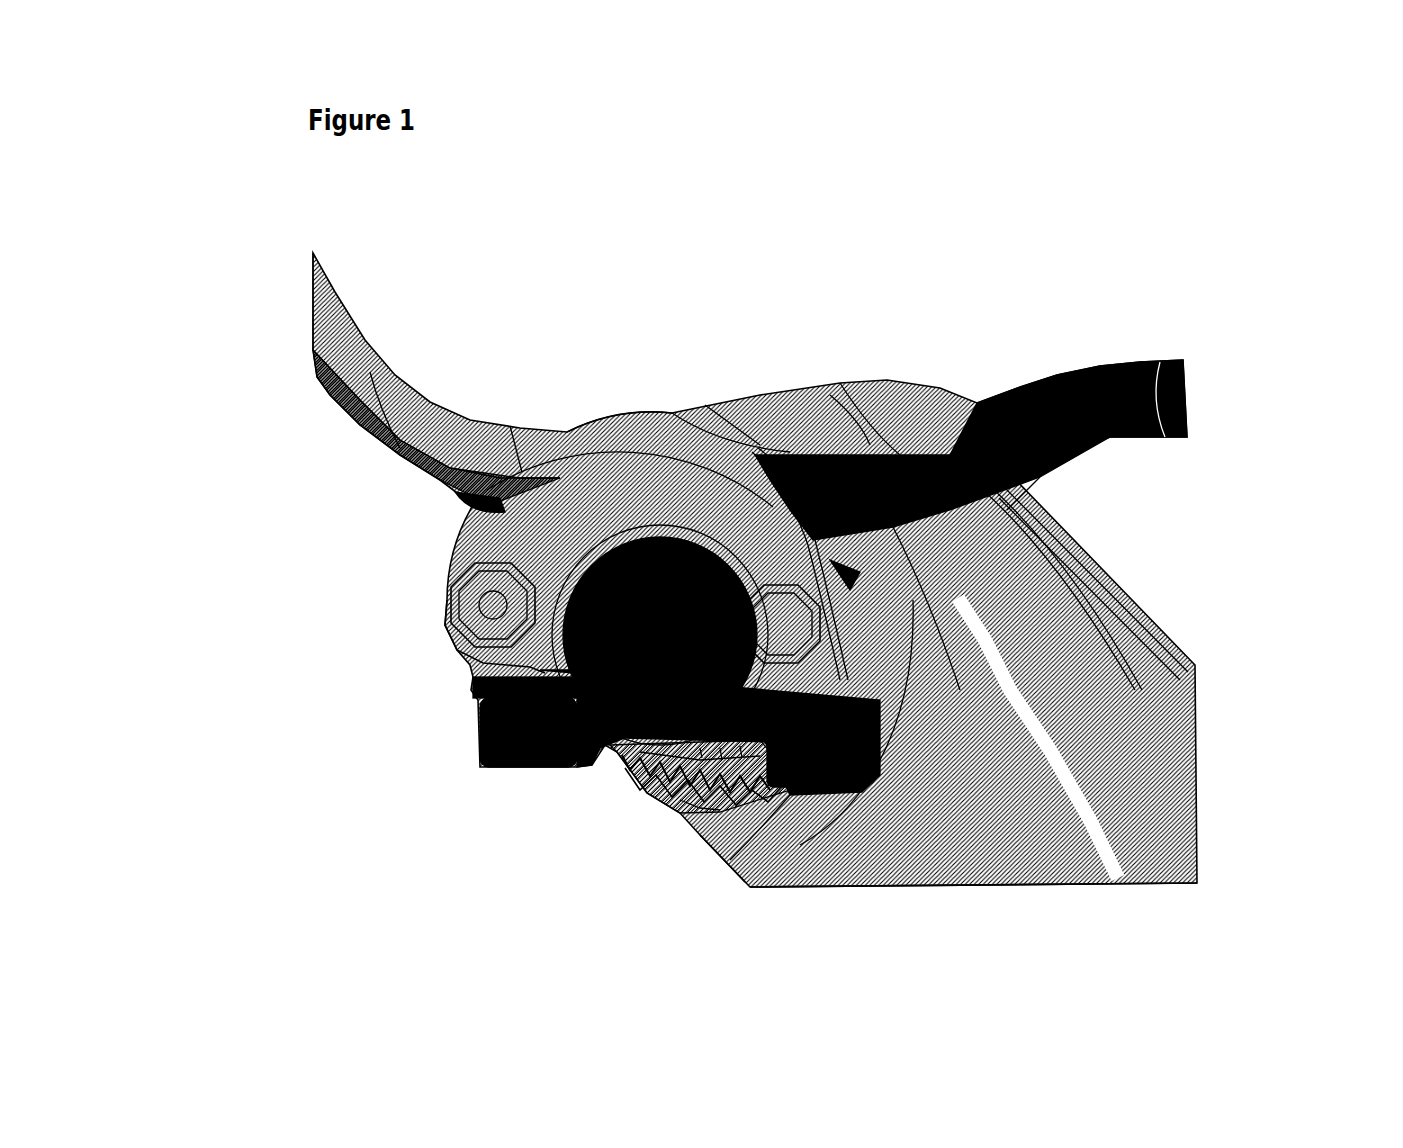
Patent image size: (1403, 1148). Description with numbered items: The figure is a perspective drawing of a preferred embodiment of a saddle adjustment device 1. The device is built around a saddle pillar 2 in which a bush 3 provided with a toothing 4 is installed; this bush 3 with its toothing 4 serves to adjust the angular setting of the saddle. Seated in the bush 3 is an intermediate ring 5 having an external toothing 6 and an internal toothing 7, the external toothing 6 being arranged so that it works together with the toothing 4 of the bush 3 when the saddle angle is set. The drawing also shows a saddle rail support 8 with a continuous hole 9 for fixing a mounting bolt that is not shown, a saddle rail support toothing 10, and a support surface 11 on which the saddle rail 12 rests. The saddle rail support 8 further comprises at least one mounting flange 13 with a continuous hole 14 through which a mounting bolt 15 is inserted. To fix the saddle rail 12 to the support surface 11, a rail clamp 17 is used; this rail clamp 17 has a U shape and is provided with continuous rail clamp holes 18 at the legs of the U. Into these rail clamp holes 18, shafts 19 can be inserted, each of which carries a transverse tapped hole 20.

The saddle adjustment device 1 is at (908, 260).
The saddle pillar 2 is at (980, 400).
The bush 3 is at (647, 788).
The toothing 4 is at (690, 827).
The intermediate ring 5 is at (640, 780).
The external toothing 6 is at (753, 887).
The internal toothing 7 is at (657, 798).
The saddle rail support 8 is at (470, 783).
The continuous hole 9 is at (553, 577).
The saddle rail support toothing 10 is at (677, 807).
The support surface 11 is at (1007, 510).
The saddle rail 12 is at (352, 303).
The mounting flange 13 is at (470, 686).
The continuous hole 14 is at (858, 690).
The mounting bolt 15 is at (480, 731).
The rail clamp 17 is at (698, 408).
The rail clamp holes 18 is at (452, 589).
The shafts 19 is at (479, 603).
The transverse tapped hole 20 is at (852, 577).